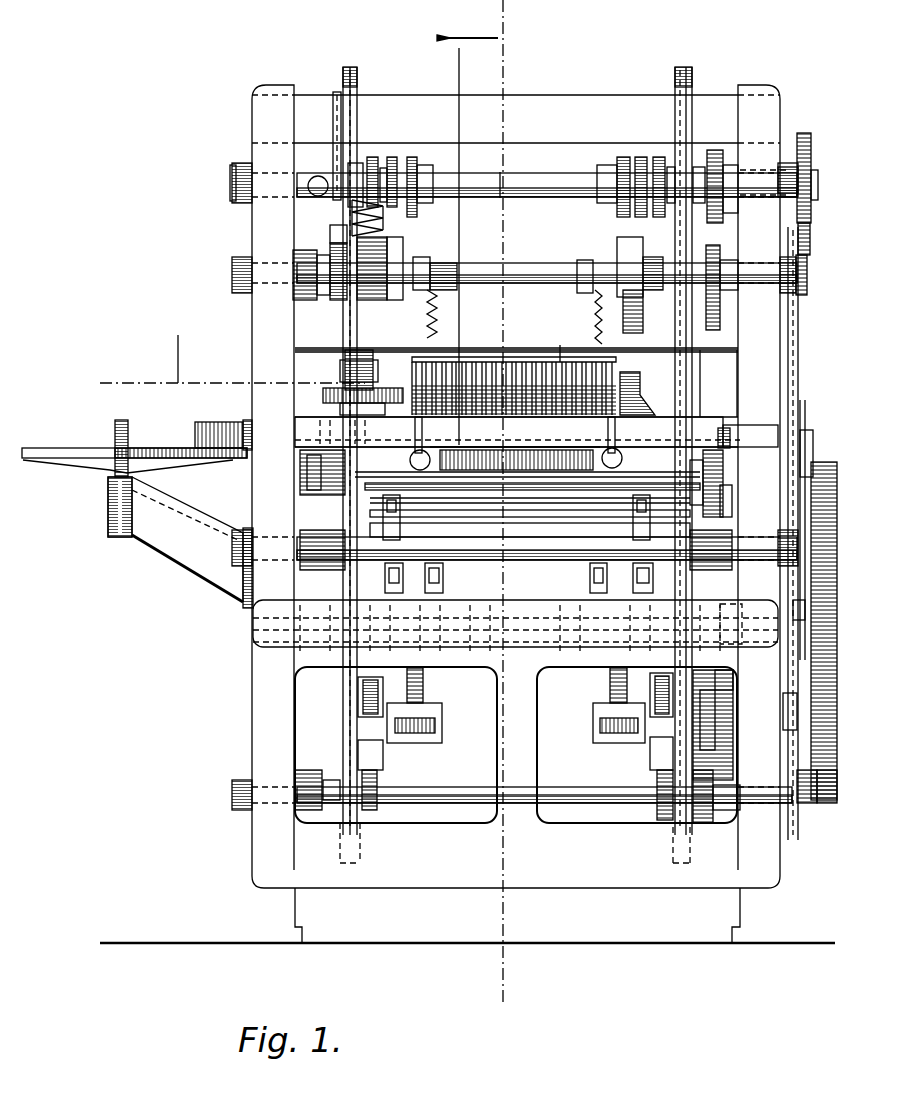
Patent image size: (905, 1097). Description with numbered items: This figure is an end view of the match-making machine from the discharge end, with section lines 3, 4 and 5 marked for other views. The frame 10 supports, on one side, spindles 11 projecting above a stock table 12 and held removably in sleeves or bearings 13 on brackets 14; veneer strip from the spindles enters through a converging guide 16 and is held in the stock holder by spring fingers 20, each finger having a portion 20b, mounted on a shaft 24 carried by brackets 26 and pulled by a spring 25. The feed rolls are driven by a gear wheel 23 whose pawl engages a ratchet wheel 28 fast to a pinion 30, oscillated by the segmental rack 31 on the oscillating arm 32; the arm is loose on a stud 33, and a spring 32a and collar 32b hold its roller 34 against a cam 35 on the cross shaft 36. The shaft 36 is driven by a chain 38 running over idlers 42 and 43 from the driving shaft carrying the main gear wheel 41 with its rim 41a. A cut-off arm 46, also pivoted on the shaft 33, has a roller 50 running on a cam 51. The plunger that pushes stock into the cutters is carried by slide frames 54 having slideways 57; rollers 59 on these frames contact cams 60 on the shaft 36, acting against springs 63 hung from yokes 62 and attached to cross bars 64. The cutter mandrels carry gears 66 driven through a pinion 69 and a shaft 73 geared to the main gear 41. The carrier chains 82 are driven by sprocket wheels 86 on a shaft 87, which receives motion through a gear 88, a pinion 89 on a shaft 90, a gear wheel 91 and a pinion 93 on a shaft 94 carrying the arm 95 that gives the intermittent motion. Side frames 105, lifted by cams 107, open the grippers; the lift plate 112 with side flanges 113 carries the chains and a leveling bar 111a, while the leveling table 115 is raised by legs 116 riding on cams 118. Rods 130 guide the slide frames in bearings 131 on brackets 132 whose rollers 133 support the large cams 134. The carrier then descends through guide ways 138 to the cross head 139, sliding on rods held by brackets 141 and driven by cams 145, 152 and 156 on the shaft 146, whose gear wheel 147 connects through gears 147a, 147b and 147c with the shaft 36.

The section line 3— 3 is at (476, 502).
The section line 4— 4 is at (468, 246).
The section line 5 is at (227, 363).
The frame 10 is at (262, 258).
The spindles 11 is at (126, 430).
The stock table 12 is at (146, 450).
The sleeves or bearings 13 is at (110, 497).
The brackets 14 is at (175, 550).
The guide 16 is at (214, 430).
The spring fingers 20 is at (512, 362).
The rack finger 20b is at (558, 360).
The gear wheel 23 is at (335, 412).
The shaft 24 is at (665, 352).
The spring 25 is at (515, 434).
The brackets 26 is at (660, 395).
The ratchet wheel 28 is at (345, 398).
The pinion 30 is at (340, 385).
The oscillating segment or rack 31 is at (345, 378).
The oscillating arm 32 is at (335, 300).
The spring 32a is at (357, 165).
The collar 32b is at (392, 160).
The stud 33 is at (388, 225).
The roller 34 is at (295, 275).
The cam 35 is at (320, 285).
The cross shaft 36 is at (545, 262).
The chain 38 is at (798, 362).
The gear wheel 41 is at (820, 572).
The rim 41a is at (806, 805).
The idler 42 is at (808, 430).
The idler 43 is at (808, 470).
The swinging arm 46 is at (517, 432).
The roller 50 is at (440, 358).
The cam 51 is at (440, 318).
The slide frames 54 is at (398, 250).
The slideways 57 is at (802, 288).
The rollers 59 is at (635, 315).
The cams 60 is at (400, 245).
The yokes 62 is at (425, 260).
The spring 63 is at (440, 288).
The cross bars 64 is at (516, 443).
The gears 66 is at (740, 437).
The pinion 69 is at (728, 512).
The shaft 73 is at (726, 488).
The double link chains 82 is at (343, 84).
The sprocket wheels 86 is at (320, 805).
The shaft 87 is at (440, 800).
The gear 88 is at (705, 825).
The pinion 89 is at (725, 690).
The shaft 90 is at (785, 714).
The gear wheel 91 is at (728, 672).
The pinion 93 is at (725, 632).
The shaft 94 is at (256, 622).
The arm 95 is at (795, 605).
The side frames 105 is at (648, 504).
The cams 107 is at (405, 585).
The bar 111a is at (555, 500).
The lift plate or table 112 is at (530, 525).
The vertical side flanges 113 is at (340, 500).
The leveling table 115 is at (480, 500).
The legs 116 is at (592, 572).
The cams 118 is at (490, 590).
The rods 130 is at (370, 735).
The bearings 131 is at (385, 692).
The brackets 132 is at (300, 706).
The rollers 133 is at (430, 720).
The large cams 134 is at (424, 680).
The guide ways 138 is at (334, 116).
The cross head 139 is at (520, 190).
The brackets 141 is at (305, 185).
The actuating cams 145 is at (655, 157).
The shaft 146 is at (507, 170).
The gear wheel 147 is at (803, 132).
The gear 147a is at (808, 240).
The gear 147b is at (715, 215).
The gear 147c is at (720, 310).
The cams 152 is at (625, 157).
The cams 156 is at (420, 165).